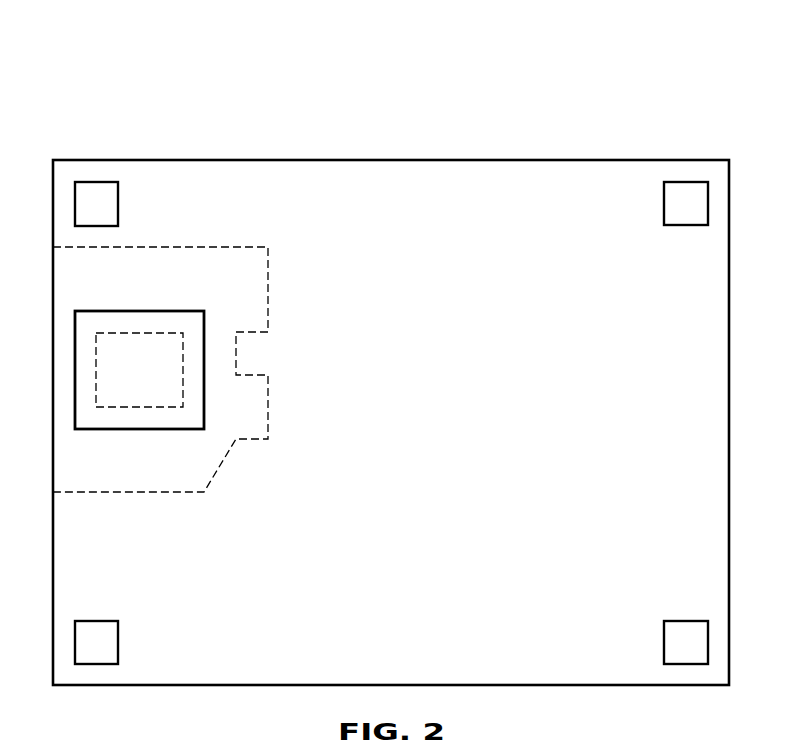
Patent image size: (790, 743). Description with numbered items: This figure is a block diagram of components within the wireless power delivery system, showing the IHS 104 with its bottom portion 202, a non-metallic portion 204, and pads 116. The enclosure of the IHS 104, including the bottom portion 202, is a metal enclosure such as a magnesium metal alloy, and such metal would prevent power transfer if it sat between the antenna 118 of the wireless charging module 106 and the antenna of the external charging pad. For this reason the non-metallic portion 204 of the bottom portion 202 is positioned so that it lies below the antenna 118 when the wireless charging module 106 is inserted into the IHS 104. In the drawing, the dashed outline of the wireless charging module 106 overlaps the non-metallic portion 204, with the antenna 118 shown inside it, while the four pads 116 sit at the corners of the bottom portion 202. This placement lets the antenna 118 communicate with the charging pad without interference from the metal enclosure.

The IHS 104 is at (193, 74).
The bottom portion 202 is at (257, 160).
The pads 116 is at (119, 202).
The wireless charging module 106 is at (108, 493).
The non-metallic portion 204 is at (139, 311).
The antenna 118 is at (126, 408).